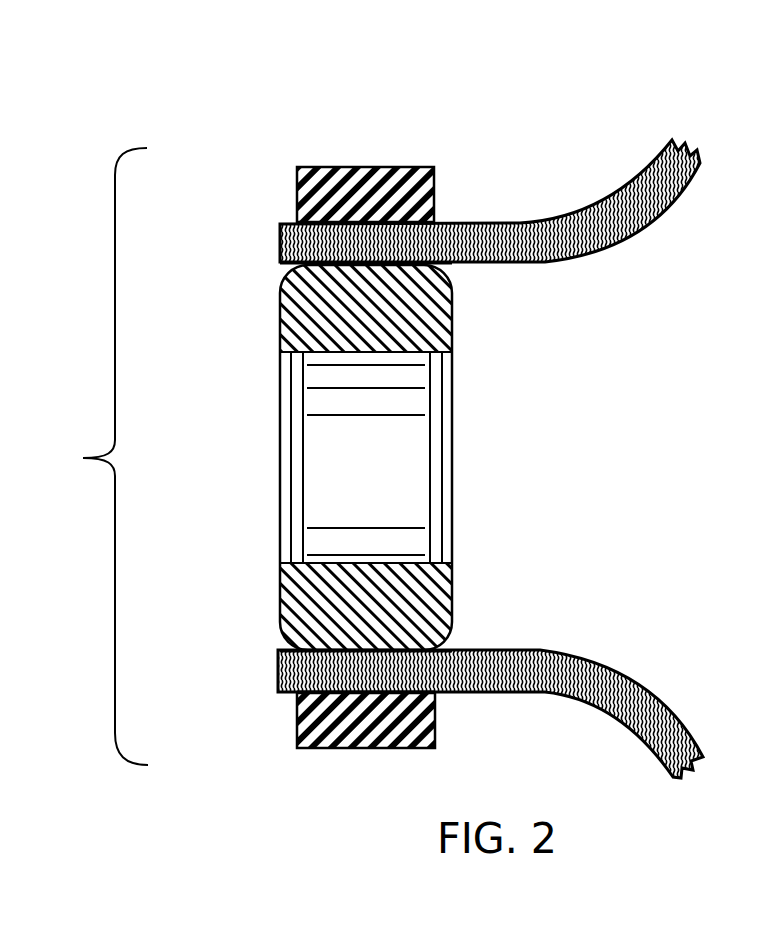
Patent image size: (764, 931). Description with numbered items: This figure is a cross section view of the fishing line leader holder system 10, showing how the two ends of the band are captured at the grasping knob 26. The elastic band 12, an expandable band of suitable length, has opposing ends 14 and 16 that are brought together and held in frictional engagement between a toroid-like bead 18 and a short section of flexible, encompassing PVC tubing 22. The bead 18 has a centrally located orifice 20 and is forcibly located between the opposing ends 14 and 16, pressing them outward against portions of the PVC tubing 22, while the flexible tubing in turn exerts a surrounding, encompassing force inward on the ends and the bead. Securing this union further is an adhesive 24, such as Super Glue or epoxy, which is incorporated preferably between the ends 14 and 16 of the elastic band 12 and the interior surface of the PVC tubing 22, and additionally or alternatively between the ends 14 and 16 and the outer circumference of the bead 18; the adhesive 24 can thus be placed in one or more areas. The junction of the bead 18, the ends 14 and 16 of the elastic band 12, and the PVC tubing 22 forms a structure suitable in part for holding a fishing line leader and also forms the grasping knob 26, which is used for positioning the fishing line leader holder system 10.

The fishing line leader holder system 10 is at (245, 120).
The elastic band 12 is at (461, 459).
The opposing end 14 is at (293, 243).
The opposing end 16 is at (278, 677).
The bead 18 is at (300, 290).
The orifice 20 is at (335, 437).
The PVC tubing 22 is at (380, 167).
The adhesive 24 is at (297, 222).
The grasping knob 26 is at (99, 456).